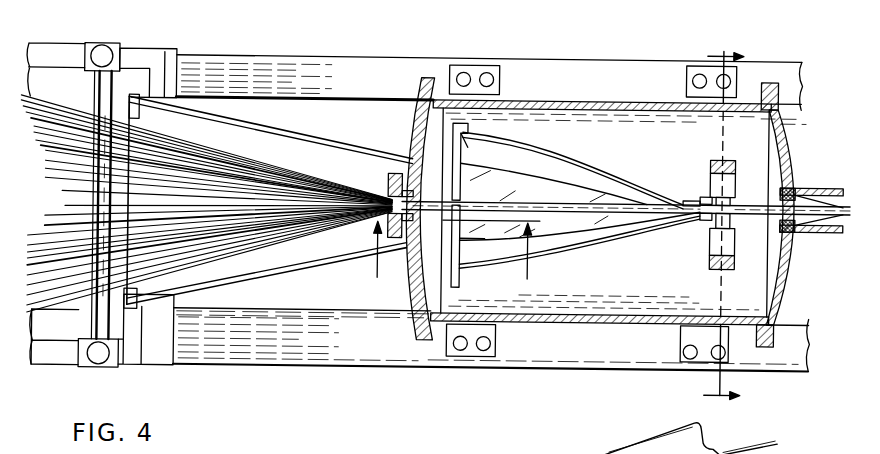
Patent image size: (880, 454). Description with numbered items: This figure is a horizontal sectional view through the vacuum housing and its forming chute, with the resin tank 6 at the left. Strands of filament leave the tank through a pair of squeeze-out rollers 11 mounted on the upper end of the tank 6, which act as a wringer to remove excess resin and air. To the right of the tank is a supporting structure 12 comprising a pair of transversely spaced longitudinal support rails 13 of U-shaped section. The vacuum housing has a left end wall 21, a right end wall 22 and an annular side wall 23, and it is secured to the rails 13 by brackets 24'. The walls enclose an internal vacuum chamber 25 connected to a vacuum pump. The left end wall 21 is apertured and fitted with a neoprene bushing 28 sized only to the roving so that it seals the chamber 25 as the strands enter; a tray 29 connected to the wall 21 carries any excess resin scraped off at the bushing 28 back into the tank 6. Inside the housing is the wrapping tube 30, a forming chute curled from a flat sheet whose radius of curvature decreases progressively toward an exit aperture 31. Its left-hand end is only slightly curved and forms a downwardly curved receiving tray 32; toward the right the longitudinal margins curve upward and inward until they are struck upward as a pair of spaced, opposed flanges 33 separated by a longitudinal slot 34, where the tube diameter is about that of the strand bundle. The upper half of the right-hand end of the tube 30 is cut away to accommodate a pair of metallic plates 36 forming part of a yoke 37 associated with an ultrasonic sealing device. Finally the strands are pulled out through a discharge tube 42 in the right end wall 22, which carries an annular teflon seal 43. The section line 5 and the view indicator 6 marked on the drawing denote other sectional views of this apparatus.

The section line 5- 5 is at (462, 260).
The resin tank 6 is at (71, 96).
The squeeze-out rollers 11 is at (111, 96).
The supporting structure 12 is at (262, 340).
The longitudinal support rails 13 is at (573, 84).
The left end wall 21 is at (412, 117).
The right end wall 22 is at (787, 265).
The annular side wall 23 is at (586, 323).
The brackets 24' is at (729, 360).
The vacuum chamber 25 is at (630, 298).
The bushing 28 is at (388, 184).
The tray 29 is at (318, 269).
The wrapping tube 30 is at (571, 172).
The exit aperture 31 is at (738, 214).
The receiving tray 32 is at (480, 242).
The upwardly extending flanges 33 is at (684, 198).
The longitudinal slot 34 is at (706, 218).
The metallic plates 36 is at (727, 199).
The yoke 37 is at (709, 258).
The discharge tube 42 is at (826, 232).
The annular teflon seal 43 is at (826, 184).